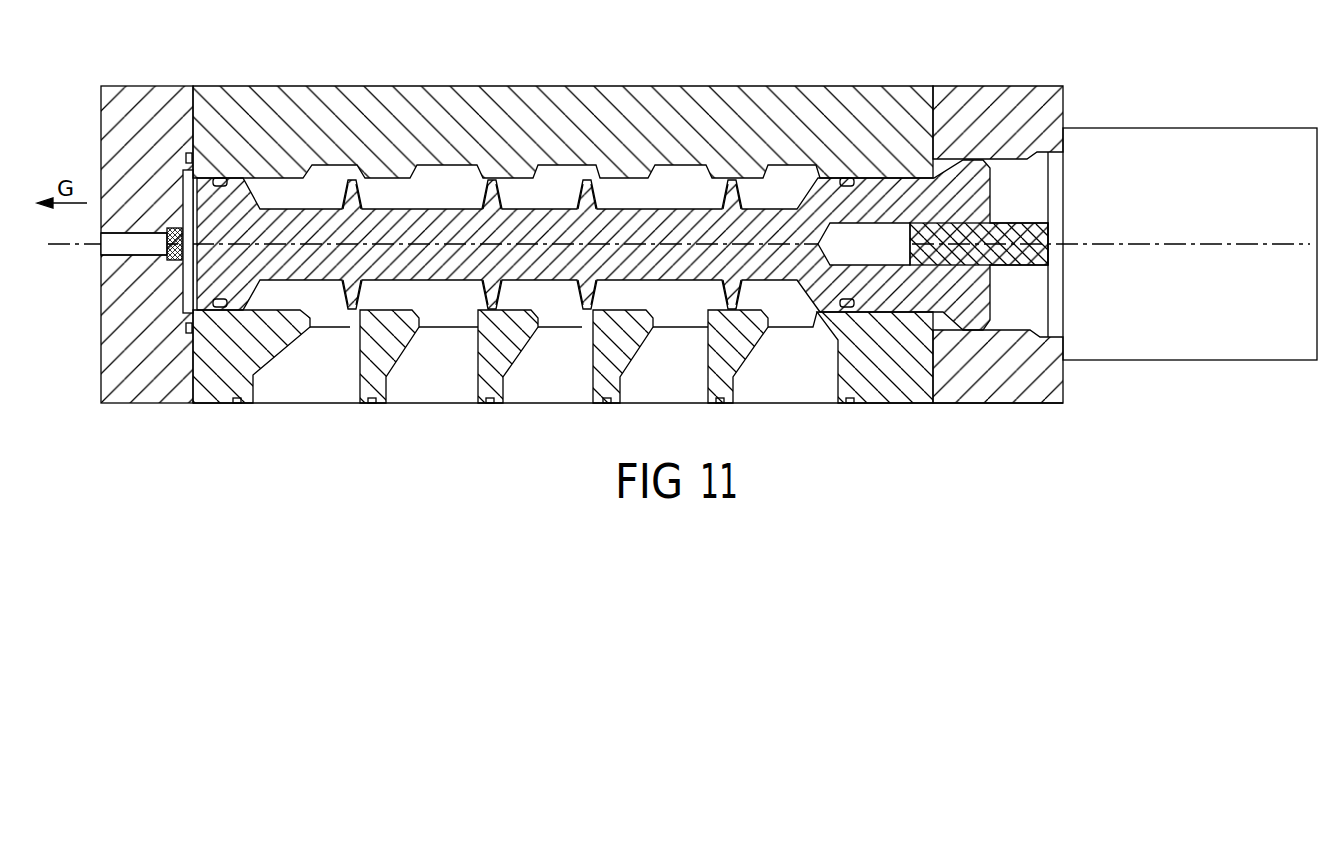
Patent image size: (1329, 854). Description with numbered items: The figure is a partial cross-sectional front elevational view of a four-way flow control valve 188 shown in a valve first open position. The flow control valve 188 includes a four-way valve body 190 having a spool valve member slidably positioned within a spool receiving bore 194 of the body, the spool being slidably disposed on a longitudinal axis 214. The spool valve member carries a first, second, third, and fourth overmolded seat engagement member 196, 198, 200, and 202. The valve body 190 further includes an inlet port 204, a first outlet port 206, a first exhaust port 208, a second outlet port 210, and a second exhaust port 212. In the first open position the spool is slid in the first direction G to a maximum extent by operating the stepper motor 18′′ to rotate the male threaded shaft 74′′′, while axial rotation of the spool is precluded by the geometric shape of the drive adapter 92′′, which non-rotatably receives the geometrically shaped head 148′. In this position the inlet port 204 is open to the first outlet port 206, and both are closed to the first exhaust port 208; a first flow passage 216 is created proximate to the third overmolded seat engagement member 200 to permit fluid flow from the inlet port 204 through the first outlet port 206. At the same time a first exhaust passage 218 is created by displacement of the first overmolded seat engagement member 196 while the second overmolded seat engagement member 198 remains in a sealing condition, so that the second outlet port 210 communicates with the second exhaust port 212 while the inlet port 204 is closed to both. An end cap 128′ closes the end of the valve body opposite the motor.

The flow control valve 188 is at (1042, 77).
The 4-way valve body 190 is at (237, 102).
The spool receiving bore 194 is at (296, 191).
The first overmolded seat engagement member 196 is at (360, 183).
The second overmolded seat engagement member 198 is at (500, 183).
The third overmolded seat engagement member 200 is at (598, 183).
The fourth overmolded seat engagement member 202 is at (740, 183).
The male threaded shaft 74′′′ is at (1002, 235).
The stepper motor 18′′ is at (1233, 153).
The longitudinal axis 214 is at (86, 255).
The end cap 128′ is at (148, 390).
The second exhaust port 212 is at (309, 384).
The second outlet port 210 is at (443, 386).
The inlet port 204 is at (559, 386).
The first outlet port 206 is at (674, 386).
The first exhaust port 208 is at (796, 376).
The drive adapter 92′′ is at (921, 397).
The geometrically shaped head 148′ is at (968, 318).
The first exhaust passage 218 is at (358, 312).
The first flow passage 216 is at (592, 312).